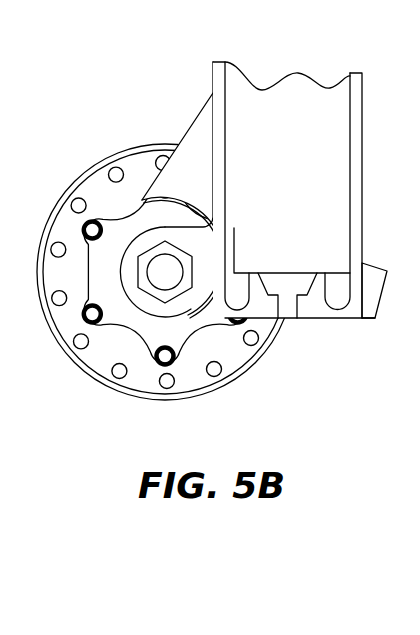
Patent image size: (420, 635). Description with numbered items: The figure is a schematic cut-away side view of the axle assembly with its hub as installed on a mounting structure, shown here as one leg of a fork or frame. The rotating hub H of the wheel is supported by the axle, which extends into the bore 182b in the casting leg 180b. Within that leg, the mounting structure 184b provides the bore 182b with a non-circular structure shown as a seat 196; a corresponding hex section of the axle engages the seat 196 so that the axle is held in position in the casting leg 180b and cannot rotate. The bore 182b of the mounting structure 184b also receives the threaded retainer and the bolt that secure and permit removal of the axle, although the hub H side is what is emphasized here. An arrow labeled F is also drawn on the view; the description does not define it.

The rotating hub H is at (84, 156).
The force direction F is at (197, 90).
The casting leg 180b is at (283, 123).
The bore 182b is at (158, 292).
The mounting structure 184b is at (190, 170).
The seat 196 is at (183, 292).